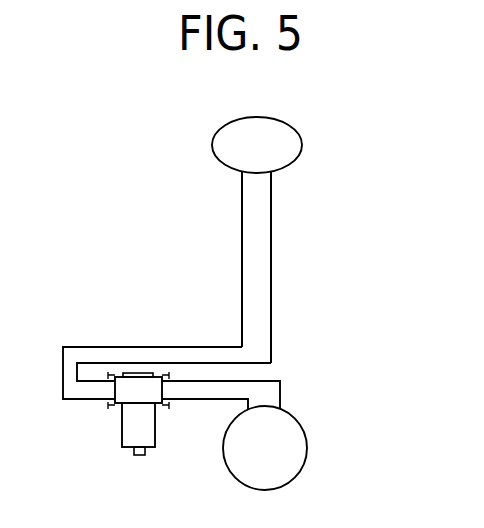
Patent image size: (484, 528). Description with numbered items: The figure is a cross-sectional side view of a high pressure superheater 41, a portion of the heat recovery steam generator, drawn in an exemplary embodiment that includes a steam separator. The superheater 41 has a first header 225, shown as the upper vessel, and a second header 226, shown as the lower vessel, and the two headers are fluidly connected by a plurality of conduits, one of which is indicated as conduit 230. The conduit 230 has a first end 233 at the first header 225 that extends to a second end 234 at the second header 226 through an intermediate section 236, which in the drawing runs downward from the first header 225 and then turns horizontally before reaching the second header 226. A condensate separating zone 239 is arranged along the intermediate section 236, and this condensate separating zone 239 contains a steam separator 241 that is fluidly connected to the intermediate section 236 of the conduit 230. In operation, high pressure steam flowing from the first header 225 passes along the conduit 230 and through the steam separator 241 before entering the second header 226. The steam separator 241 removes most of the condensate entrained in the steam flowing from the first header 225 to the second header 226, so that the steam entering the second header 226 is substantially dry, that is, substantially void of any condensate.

The high pressure superheater 41 is at (338, 222).
The first header 225 is at (293, 113).
The second header 226 is at (315, 446).
The conduit 230 is at (293, 305).
The first end 233 is at (273, 175).
The second end 234 is at (283, 408).
The intermediate section 236 is at (242, 235).
The condensate separating zone 239 is at (108, 328).
The steam separator 241 is at (101, 427).